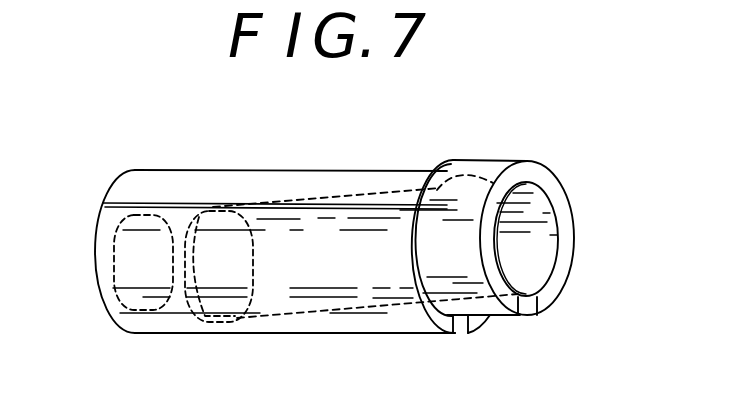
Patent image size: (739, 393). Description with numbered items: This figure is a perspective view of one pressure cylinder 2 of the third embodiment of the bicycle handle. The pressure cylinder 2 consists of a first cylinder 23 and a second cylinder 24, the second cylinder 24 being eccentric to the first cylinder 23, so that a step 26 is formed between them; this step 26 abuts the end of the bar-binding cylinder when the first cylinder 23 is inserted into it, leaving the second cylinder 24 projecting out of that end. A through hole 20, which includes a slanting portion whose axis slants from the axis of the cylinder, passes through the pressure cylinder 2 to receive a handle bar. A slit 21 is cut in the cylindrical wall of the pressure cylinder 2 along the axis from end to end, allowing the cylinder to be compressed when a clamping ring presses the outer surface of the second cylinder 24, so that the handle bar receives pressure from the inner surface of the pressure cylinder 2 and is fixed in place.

The pressure cylinder 2 is at (208, 158).
The through hole 20 is at (530, 200).
The slit 21 is at (463, 333).
The first cylinder 23 is at (108, 207).
The second cylinder 24 is at (558, 283).
The step 26 is at (455, 160).